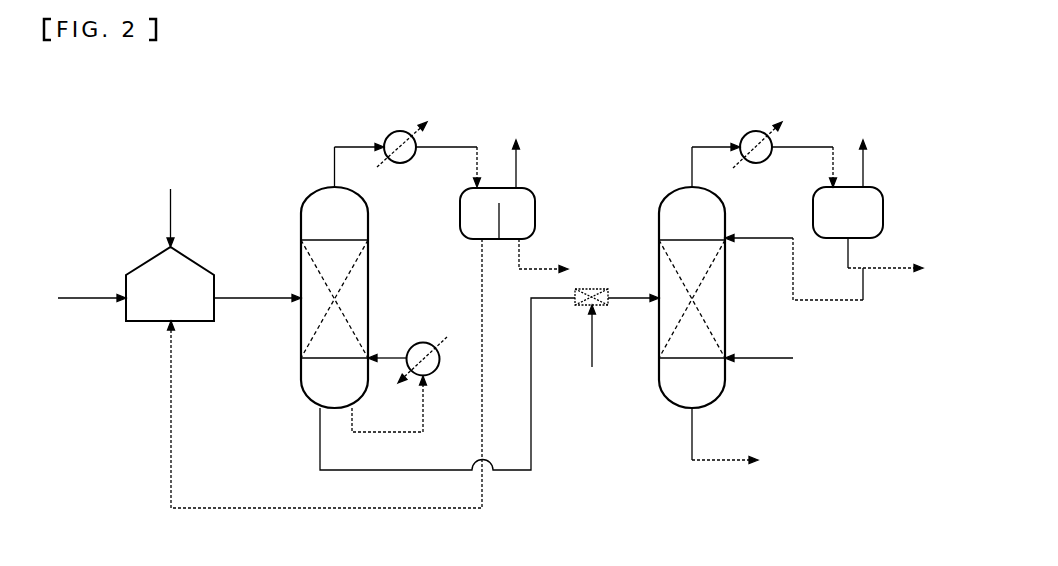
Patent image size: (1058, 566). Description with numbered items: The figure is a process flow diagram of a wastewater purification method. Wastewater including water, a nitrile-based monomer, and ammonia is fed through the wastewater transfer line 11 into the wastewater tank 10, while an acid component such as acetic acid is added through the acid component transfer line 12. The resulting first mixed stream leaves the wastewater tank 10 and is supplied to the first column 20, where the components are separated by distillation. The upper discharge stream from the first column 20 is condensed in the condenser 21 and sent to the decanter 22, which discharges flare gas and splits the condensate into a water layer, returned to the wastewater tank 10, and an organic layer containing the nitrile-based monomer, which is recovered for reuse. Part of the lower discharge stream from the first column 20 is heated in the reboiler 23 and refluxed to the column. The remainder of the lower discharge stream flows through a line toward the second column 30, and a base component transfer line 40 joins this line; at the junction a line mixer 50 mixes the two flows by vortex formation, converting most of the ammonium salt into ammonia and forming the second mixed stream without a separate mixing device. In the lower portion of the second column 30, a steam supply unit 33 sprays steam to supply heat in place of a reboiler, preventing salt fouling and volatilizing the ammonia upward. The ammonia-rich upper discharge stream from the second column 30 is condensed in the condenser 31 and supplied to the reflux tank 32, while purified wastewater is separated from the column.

The wastewater tank 10 is at (170, 284).
The wastewater transfer line 11 is at (88, 298).
The acid component transfer line 12 is at (170, 221).
The first column 20 is at (300, 188).
The condenser 21 is at (390, 133).
The decanter 22 is at (538, 197).
The reboiler 23 is at (428, 342).
The second column 30 is at (672, 190).
The condenser 31 is at (748, 132).
The reflux tank 32 is at (885, 205).
The steam supply unit 33 is at (765, 359).
The base component transfer line 40 is at (595, 340).
The line mixer 50 is at (588, 290).